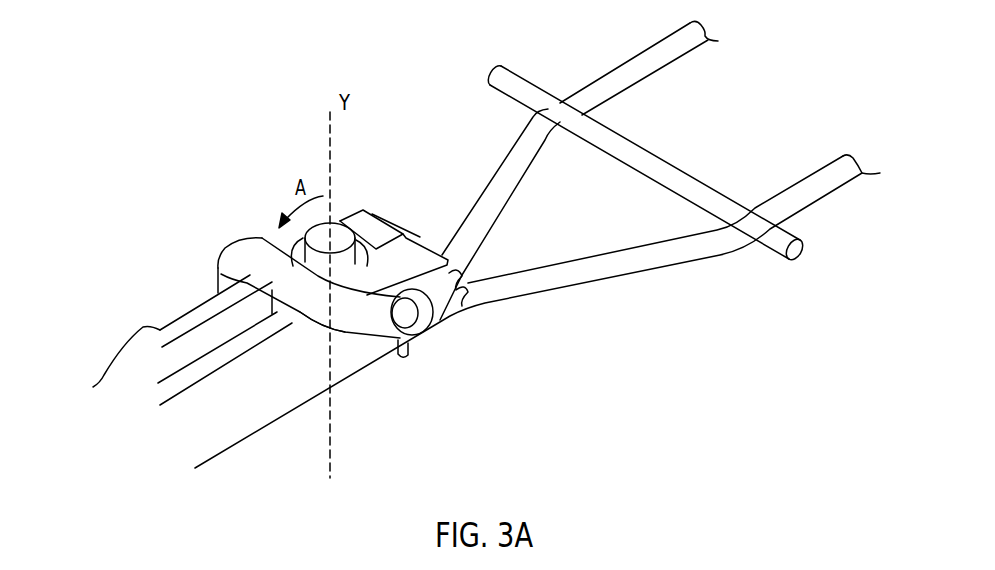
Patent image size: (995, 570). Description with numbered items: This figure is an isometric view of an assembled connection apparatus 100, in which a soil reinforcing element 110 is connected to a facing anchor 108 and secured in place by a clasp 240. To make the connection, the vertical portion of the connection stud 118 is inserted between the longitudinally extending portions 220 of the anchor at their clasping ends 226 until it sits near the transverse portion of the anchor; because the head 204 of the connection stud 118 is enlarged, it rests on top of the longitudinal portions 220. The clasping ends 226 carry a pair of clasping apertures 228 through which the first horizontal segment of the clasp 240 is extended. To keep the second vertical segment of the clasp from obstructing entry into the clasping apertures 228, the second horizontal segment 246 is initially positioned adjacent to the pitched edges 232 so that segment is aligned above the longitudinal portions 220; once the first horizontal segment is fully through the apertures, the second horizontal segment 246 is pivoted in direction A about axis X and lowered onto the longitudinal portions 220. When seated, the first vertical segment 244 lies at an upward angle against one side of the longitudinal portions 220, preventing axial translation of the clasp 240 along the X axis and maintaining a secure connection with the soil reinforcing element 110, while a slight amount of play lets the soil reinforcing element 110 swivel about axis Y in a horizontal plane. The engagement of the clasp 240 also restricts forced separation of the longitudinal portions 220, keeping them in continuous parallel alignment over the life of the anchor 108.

The connection apparatus 100 is at (313, 154).
The facing anchor 108 is at (252, 415).
The soil reinforcing element 110 is at (610, 88).
The connection stud 118 is at (468, 292).
The head 204 is at (356, 250).
The longitudinally extending portions 220 is at (160, 405).
The clasping ends 226 is at (366, 222).
The clasping apertures 228 is at (428, 350).
The pitched edges 232 is at (458, 240).
The clasp 240 is at (232, 242).
The first vertical segment 244 is at (345, 317).
The second horizontal segment 246 is at (218, 281).